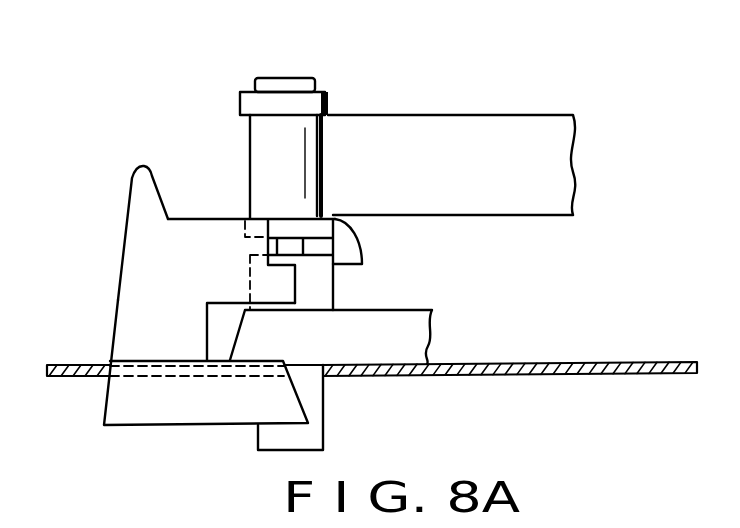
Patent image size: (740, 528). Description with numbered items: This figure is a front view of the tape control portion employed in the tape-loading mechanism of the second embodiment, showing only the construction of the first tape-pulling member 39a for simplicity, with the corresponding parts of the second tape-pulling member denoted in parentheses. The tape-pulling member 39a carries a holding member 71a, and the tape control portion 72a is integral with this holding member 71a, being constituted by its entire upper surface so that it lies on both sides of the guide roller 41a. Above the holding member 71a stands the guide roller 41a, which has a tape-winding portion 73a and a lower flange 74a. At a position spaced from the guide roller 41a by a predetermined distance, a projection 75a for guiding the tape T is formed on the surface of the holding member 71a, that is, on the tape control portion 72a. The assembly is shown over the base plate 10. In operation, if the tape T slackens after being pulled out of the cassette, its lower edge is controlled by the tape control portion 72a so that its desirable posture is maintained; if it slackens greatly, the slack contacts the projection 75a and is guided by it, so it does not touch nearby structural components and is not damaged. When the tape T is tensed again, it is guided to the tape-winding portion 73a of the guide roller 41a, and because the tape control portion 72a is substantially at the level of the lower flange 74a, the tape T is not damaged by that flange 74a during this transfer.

The base plate 10 is at (641, 362).
The tape T is at (530, 116).
The guide roller 41a is at (288, 78).
The tape-winding portion 73a is at (324, 159).
The tape control portion 72a is at (207, 225).
The lower flange 74a is at (340, 227).
The first tape-pulling member 39a is at (420, 308).
The projection 75a is at (132, 191).
The holding member 71a is at (103, 417).